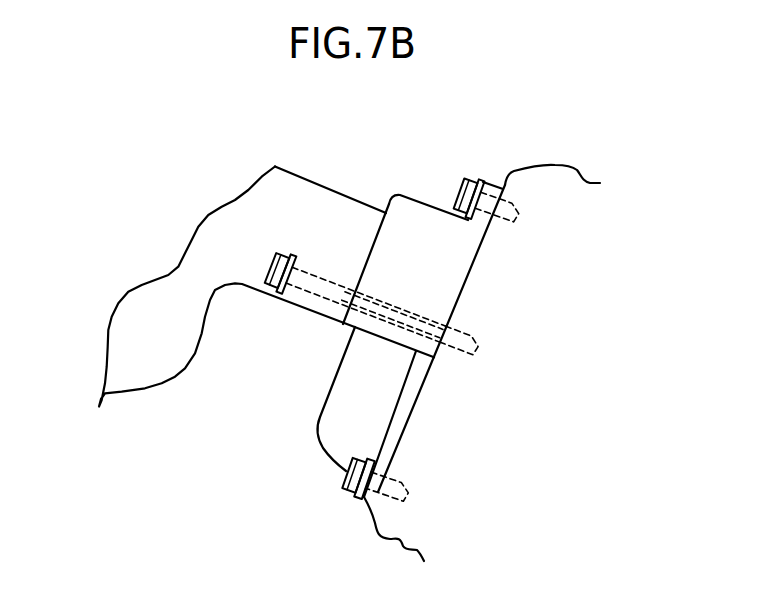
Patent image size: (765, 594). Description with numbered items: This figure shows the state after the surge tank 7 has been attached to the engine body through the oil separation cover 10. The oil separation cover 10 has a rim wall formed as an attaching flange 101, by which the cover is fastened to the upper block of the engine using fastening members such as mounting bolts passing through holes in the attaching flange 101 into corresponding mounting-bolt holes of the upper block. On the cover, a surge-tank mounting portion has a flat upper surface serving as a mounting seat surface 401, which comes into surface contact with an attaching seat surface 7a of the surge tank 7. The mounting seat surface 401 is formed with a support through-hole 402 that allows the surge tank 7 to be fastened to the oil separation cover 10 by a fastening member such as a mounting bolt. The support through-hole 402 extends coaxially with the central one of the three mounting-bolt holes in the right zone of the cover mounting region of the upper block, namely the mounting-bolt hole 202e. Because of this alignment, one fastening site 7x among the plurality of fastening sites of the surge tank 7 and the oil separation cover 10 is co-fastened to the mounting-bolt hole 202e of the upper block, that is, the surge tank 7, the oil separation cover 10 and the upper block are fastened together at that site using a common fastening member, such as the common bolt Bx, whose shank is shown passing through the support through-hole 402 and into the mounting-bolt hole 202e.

The surge tank 7 is at (158, 363).
The attaching seat surface 7a is at (368, 259).
The fastening site 7x is at (298, 253).
The mounting seat surface 401 is at (374, 238).
The support through-hole 402 is at (401, 308).
The mounting-bolt hole 202e is at (486, 344).
The common bolt Bx is at (325, 296).
The oil separation cover 10 is at (340, 409).
The attaching flange 101 is at (400, 427).